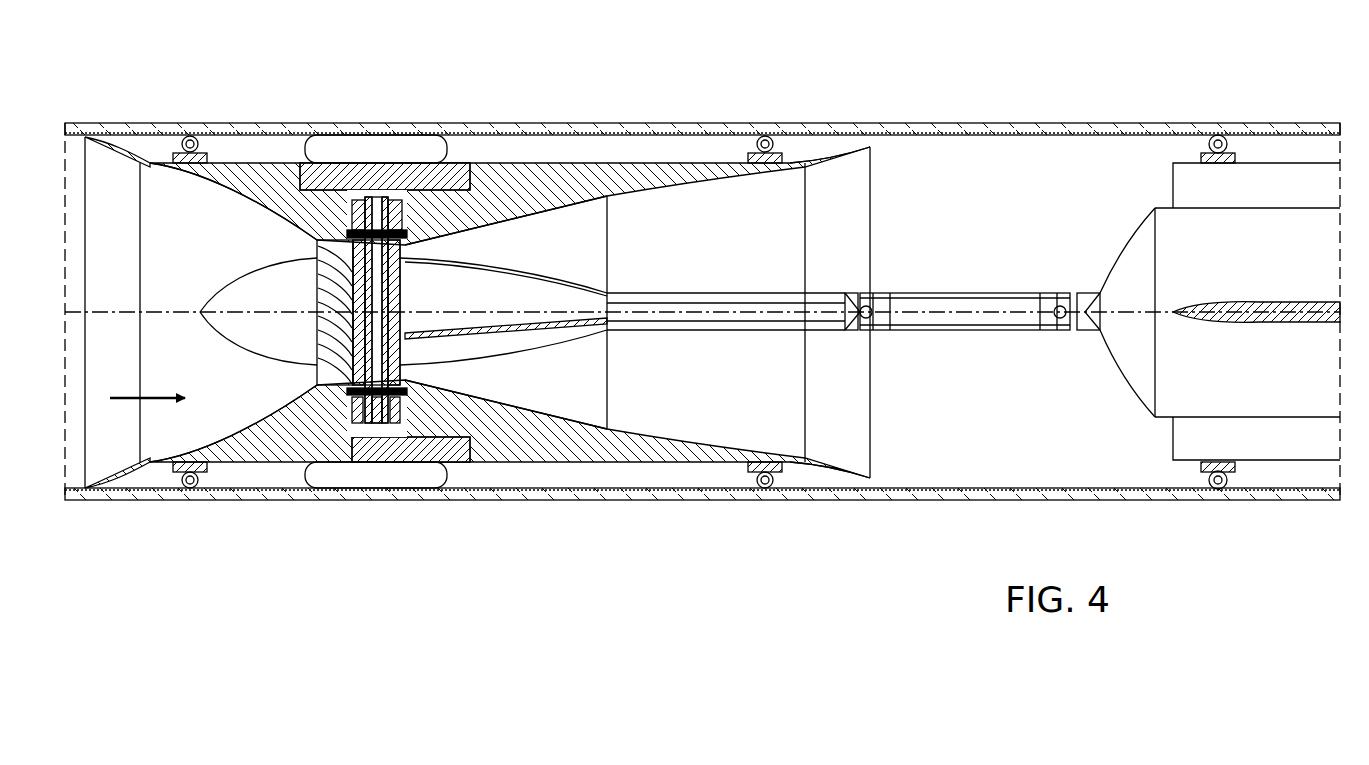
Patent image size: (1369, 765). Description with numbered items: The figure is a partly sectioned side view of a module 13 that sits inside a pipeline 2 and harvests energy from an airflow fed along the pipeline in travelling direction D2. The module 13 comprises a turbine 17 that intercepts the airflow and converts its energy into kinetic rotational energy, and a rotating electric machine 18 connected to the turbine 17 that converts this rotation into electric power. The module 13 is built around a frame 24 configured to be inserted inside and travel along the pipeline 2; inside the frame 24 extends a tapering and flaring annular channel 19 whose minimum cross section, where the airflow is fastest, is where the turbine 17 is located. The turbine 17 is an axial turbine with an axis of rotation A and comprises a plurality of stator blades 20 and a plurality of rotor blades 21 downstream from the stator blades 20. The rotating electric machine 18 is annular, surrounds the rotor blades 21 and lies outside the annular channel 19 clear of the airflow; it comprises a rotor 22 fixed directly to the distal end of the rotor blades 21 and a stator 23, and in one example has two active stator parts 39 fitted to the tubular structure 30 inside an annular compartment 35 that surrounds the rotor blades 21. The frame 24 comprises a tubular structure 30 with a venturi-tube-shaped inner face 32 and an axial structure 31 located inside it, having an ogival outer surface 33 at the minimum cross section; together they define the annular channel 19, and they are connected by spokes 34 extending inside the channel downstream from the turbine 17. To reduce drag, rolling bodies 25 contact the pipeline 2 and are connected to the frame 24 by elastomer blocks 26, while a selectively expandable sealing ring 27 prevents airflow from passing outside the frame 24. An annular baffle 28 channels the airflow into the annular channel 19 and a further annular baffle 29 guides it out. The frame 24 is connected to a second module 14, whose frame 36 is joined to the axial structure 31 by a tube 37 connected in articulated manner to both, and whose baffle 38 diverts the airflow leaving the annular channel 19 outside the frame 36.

The pipeline 2 is at (560, 124).
The module 13 is at (758, 100).
The module 14 is at (1250, 105).
The turbine 17 is at (292, 250).
The rotating electric machine 18 is at (318, 212).
The annular channel 19 is at (262, 226).
The stator blades 20 is at (325, 352).
The rotor blades 21 is at (405, 254).
The rotor 22 is at (393, 210).
The stator 23 is at (412, 222).
The frame 24 is at (608, 152).
The rolling bodies 25 is at (200, 142).
The elastomer blocks 26 is at (176, 146).
The selectively expandable sealing ring 27 is at (447, 478).
The annular baffle 28 is at (130, 160).
The further annular baffle 29 is at (820, 163).
The tubular structure 30 is at (594, 452).
The axial structure 31 is at (555, 342).
The inner face 32 is at (525, 225).
The ogival outer surface 33 is at (562, 270).
The spokes 34 is at (608, 236).
The annular compartment 35 is at (379, 195).
The frame 36 is at (1160, 414).
The tube 37 is at (985, 298).
The baffle 38 is at (1138, 272).
The active stator parts 39 is at (362, 200).
The axis of rotation A is at (120, 316).
The travelling direction D2 is at (165, 400).